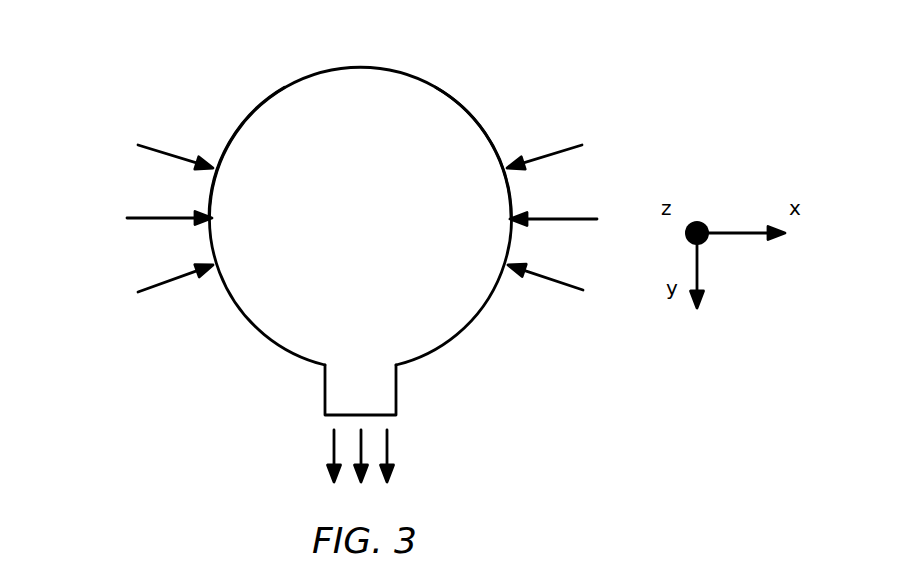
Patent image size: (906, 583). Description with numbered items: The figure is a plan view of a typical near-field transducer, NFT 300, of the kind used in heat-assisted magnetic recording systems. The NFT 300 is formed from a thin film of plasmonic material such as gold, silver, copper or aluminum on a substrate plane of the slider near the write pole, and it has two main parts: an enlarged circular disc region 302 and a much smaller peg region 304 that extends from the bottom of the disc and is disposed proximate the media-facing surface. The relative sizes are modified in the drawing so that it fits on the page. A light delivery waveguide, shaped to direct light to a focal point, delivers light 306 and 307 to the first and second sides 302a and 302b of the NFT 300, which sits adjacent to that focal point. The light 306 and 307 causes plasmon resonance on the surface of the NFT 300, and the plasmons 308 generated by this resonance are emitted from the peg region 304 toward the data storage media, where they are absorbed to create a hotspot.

The near-field transducer (NFT) 300 is at (260, 36).
The enlarged circular disc region 302 is at (361, 216).
The first side 302a is at (253, 110).
The second side 302b is at (463, 105).
The peg region 304 is at (363, 389).
The light 306 is at (158, 278).
The light 307 is at (560, 153).
The plasmons 308 is at (330, 450).